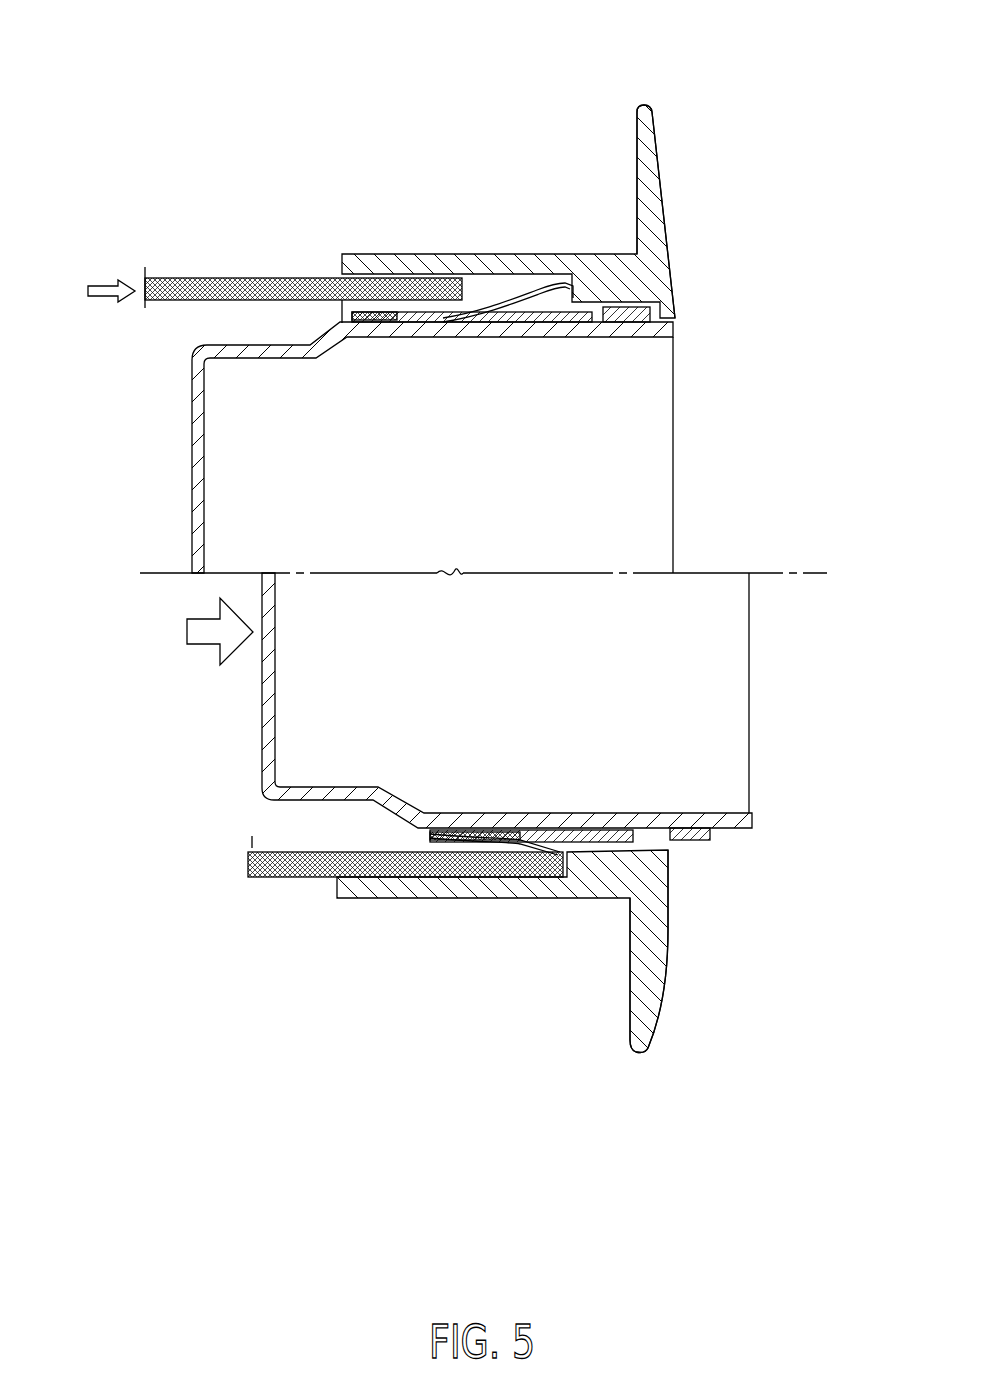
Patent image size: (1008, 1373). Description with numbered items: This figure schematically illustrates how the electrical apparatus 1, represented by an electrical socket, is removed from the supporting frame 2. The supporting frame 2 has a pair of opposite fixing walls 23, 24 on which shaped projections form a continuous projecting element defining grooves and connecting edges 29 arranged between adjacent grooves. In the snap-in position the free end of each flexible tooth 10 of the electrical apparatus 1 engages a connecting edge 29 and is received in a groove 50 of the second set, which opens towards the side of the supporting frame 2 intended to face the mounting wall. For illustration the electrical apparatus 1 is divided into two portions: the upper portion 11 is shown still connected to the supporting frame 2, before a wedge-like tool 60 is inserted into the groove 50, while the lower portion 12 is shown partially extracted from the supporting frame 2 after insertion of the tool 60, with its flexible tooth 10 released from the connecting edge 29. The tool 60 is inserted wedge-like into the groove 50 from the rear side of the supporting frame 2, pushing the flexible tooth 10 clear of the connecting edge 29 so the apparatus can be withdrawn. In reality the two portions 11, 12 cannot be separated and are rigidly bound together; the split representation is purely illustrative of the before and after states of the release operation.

The electrical apparatus 1 is at (185, 466).
The supporting frame 2 is at (631, 100).
The flexible tooth 10 is at (513, 254).
The upper portion 11 is at (617, 422).
The lower portion 12 is at (707, 700).
The fixing wall 23 is at (653, 232).
The fixing wall 24 is at (668, 903).
The connecting edge 29 is at (670, 311).
The groove 50 is at (320, 314).
The tool 60 is at (262, 275).